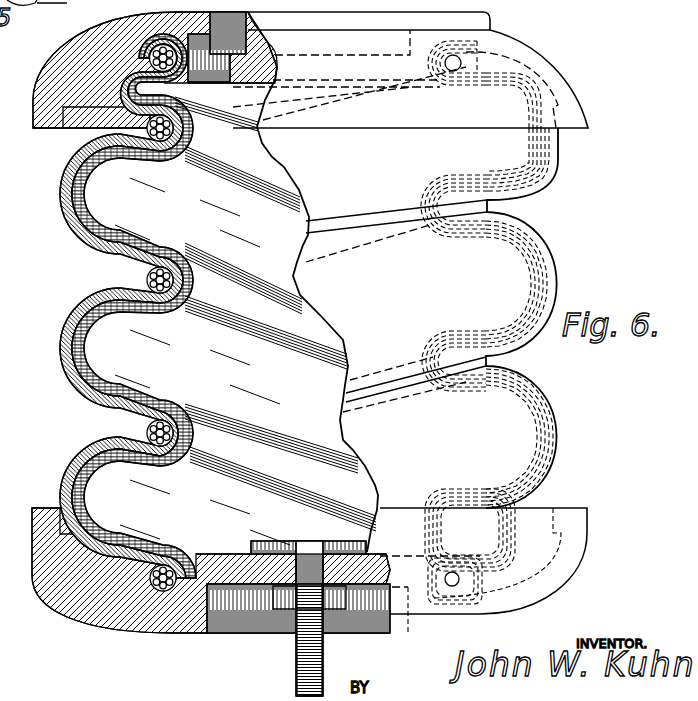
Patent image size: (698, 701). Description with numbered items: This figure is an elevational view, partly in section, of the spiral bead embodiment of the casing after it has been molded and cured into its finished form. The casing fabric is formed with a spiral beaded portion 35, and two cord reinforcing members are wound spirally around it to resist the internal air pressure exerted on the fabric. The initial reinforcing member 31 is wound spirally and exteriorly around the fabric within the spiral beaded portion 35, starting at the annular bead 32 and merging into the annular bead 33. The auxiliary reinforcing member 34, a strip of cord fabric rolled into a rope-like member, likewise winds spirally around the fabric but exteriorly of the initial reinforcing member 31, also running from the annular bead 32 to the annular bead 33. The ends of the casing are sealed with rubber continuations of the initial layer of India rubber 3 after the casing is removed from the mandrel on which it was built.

The initial layer of India rubber 3 is at (92, 496).
The reinforcing member 31 is at (97, 253).
The annular bead 32 is at (158, 50).
The annular bead 33 is at (150, 592).
The auxiliary reinforcing member 34 is at (158, 270).
The spiral beaded portion of the fabric of the casing 35 is at (268, 443).